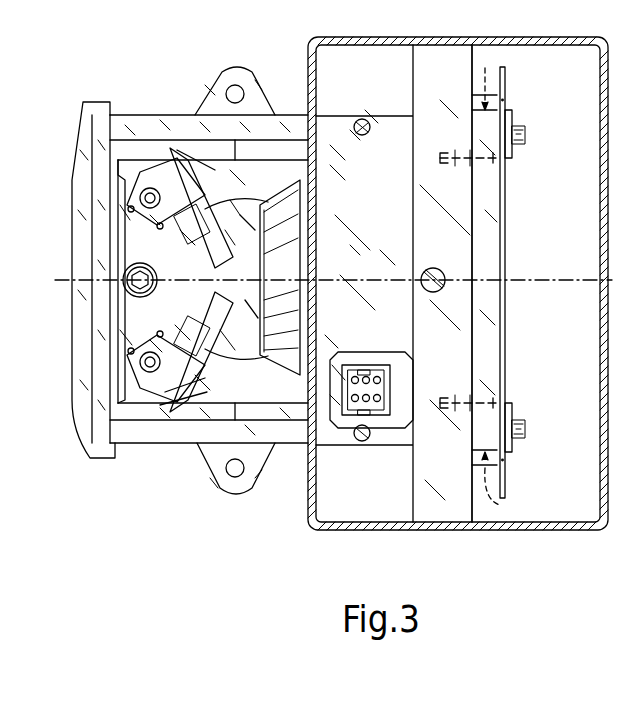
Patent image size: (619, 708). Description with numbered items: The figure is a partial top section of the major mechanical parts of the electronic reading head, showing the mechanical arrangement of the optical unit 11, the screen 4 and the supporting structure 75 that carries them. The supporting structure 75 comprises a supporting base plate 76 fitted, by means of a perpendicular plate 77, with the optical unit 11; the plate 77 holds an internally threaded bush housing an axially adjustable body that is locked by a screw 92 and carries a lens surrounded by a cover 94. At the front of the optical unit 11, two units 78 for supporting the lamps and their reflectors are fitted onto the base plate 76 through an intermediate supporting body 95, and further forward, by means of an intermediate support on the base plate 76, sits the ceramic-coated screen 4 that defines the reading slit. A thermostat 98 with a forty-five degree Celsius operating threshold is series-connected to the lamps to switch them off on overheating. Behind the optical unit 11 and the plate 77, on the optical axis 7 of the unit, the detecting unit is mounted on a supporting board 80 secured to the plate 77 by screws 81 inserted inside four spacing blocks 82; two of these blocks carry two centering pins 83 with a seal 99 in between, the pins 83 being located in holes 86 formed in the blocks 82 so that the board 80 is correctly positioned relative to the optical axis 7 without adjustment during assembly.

The screen 4 is at (74, 412).
The optical axis 7 is at (243, 272).
The optical unit 11 is at (285, 178).
The supporting structure 75 is at (276, 500).
The supporting base plate 76 is at (299, 434).
The perpendicular plate 77 is at (451, 506).
The lamp supporting units 78 is at (157, 142).
The supporting board 80 is at (506, 225).
The screws 81 is at (526, 133).
The spacing blocks 82 is at (503, 281).
The centering pins 83 is at (459, 158).
The holes 86 is at (505, 166).
The screw 92 is at (435, 268).
The cover 94 is at (287, 335).
The intermediate supporting body 95 is at (133, 311).
The thermostat 98 is at (197, 367).
The seal 99 is at (487, 343).